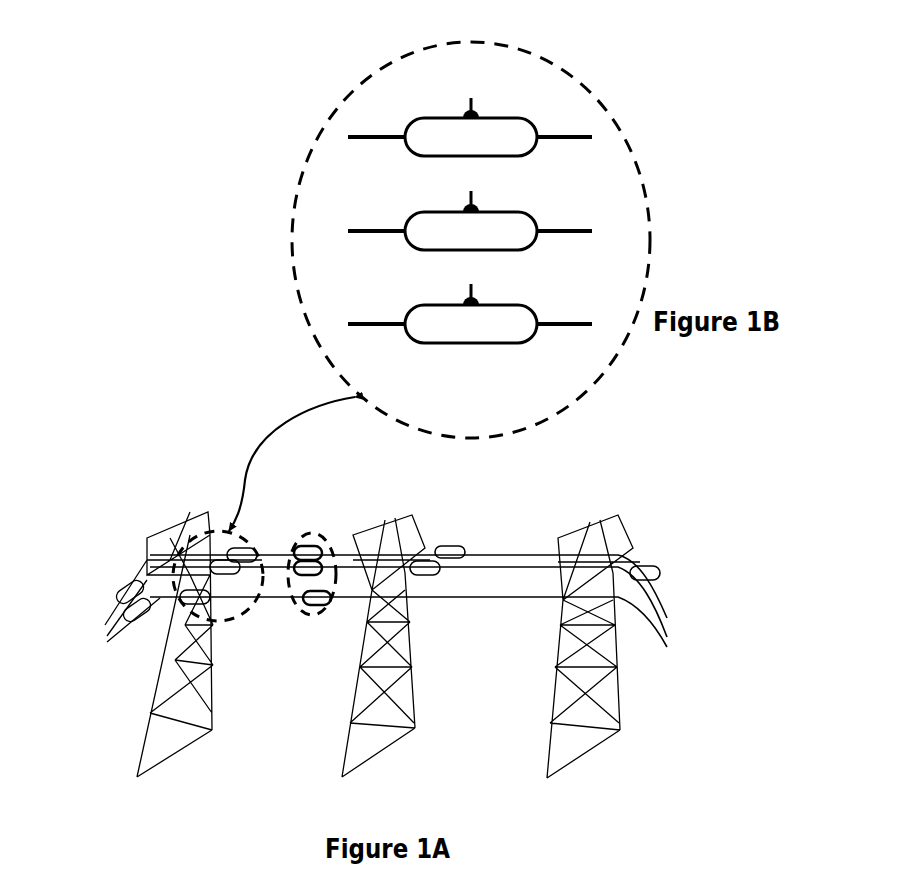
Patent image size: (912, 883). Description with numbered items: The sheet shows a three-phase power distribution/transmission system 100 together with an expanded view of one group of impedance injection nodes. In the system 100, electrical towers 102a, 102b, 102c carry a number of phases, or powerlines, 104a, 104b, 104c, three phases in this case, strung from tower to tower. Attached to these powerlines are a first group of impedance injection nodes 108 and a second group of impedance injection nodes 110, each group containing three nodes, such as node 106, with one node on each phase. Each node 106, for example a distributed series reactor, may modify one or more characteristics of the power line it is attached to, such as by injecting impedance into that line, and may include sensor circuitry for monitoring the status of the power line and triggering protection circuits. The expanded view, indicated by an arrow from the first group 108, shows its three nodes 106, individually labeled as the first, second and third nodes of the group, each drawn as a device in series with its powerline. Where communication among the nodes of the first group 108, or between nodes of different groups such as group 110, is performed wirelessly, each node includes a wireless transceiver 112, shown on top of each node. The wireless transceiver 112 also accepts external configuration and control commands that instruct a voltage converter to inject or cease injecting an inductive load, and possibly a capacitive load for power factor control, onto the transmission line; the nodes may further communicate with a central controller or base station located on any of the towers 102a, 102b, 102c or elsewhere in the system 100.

In FIG. 1A, the power distribution/transmission system 100 is at (592, 465).
In FIG. 1A, the electrical tower 102a is at (203, 663).
In FIG. 1A, the electrical tower 102b is at (413, 667).
In FIG. 1A, the electrical tower 102c is at (617, 660).
In FIG. 1A, the phase 104a is at (290, 603).
In FIG. 1A, the phase 104b is at (483, 567).
In FIG. 1A, the phase 104c is at (497, 556).
In FIG. 1B, the node 106 is at (417, 303).
In FIG. 1A, the node 106 is at (247, 541).
In FIG. 1A, the first group of impedance injection nodes 108 is at (245, 455).
In FIG. 1A, the second group of impedance injection nodes 110 is at (322, 538).
In FIG. 1B, the wireless transceiver 112 is at (474, 285).